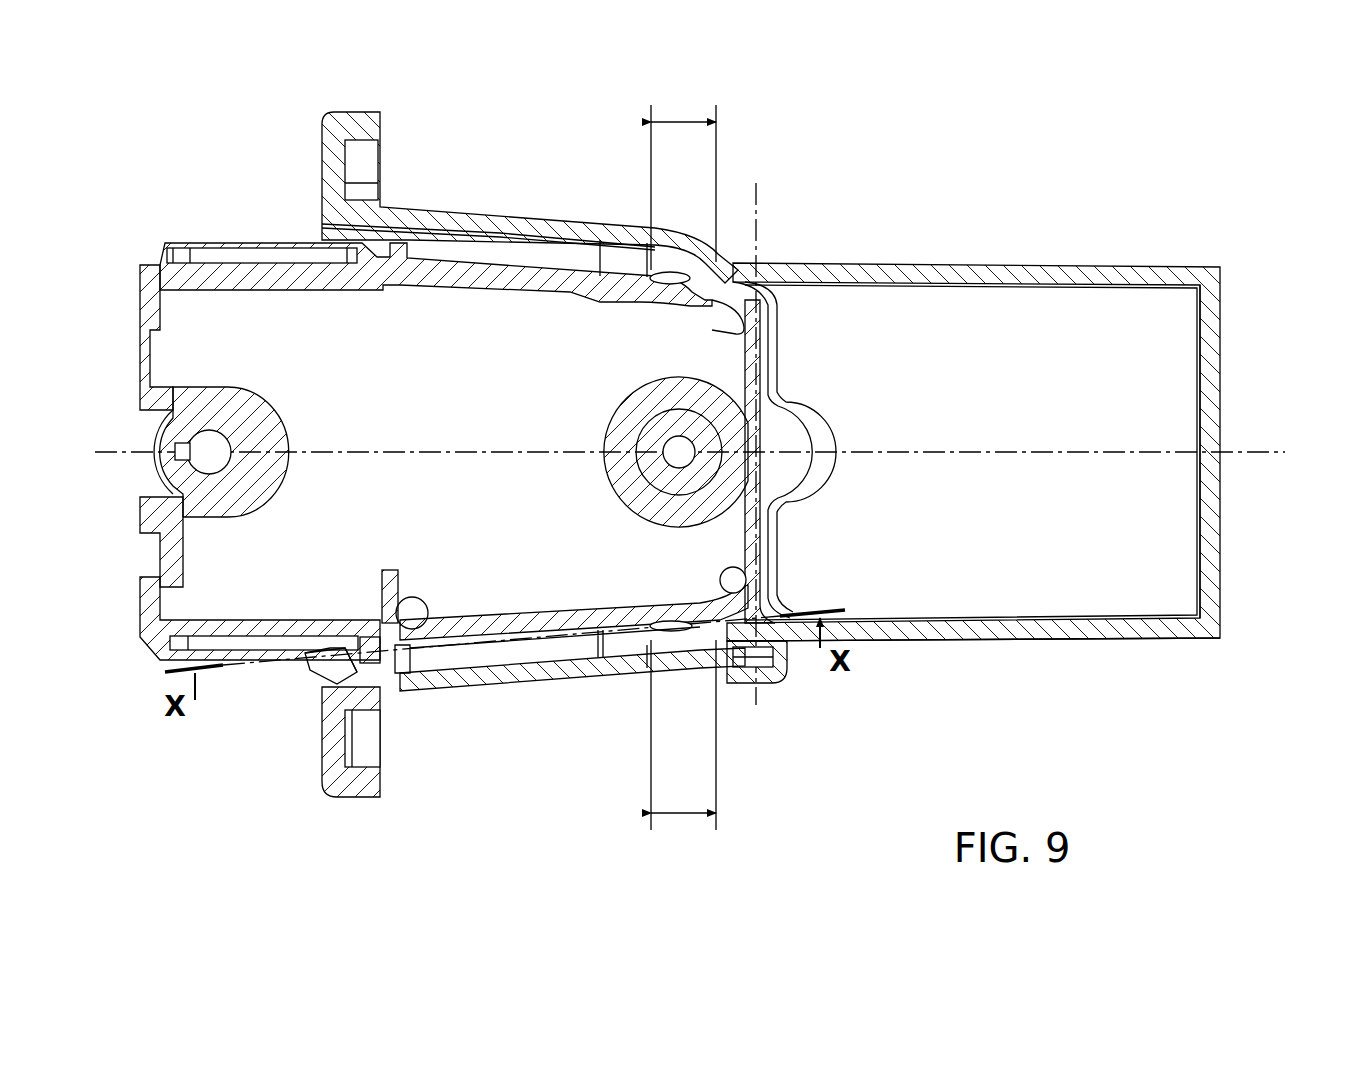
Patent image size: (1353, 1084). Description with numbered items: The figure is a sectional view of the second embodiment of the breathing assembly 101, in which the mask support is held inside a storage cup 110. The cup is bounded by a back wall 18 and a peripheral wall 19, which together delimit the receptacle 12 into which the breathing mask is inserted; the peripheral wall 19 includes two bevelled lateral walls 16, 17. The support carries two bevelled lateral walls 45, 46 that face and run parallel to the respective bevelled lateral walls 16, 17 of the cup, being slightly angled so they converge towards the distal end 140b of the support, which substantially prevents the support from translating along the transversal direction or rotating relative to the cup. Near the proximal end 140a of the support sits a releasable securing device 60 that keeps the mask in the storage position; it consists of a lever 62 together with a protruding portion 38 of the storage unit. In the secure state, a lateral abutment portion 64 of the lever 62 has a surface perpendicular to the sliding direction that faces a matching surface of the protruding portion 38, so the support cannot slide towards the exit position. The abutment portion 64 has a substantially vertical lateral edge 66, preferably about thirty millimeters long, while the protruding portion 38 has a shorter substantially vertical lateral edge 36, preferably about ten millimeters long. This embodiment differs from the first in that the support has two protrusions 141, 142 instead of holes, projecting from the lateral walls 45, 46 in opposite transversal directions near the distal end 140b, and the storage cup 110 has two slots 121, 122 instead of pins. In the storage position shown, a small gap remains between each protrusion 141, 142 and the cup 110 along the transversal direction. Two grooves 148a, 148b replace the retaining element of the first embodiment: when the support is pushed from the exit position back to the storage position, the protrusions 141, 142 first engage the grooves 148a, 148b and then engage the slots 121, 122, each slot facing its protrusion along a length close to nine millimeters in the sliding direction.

The receptacle 12 is at (1014, 482).
The bevelled lateral wall 16 is at (485, 270).
The bevelled lateral wall 17 is at (523, 628).
The back wall 18 is at (1045, 642).
The peripheral wall 19 is at (1213, 507).
The lateral edge 36 is at (322, 656).
The protruding portion 38 is at (345, 656).
The bevelled lateral wall 45 is at (527, 265).
The bevelled lateral wall 46 is at (565, 667).
The releasable securing device 60 is at (357, 695).
The lever 62 is at (215, 627).
The lateral abutment portion 64 is at (418, 642).
The lateral edge 66 is at (372, 648).
The breathing assembly 101 is at (408, 484).
The storage cup 110 is at (1014, 447).
The slot 121 is at (707, 250).
The slot 122 is at (705, 647).
The proximal end 140a is at (390, 523).
The distal end 140b is at (748, 628).
The protrusion 141 is at (778, 270).
The protrusion 142 is at (632, 657).
The groove 148a is at (530, 180).
The groove 148b is at (572, 707).